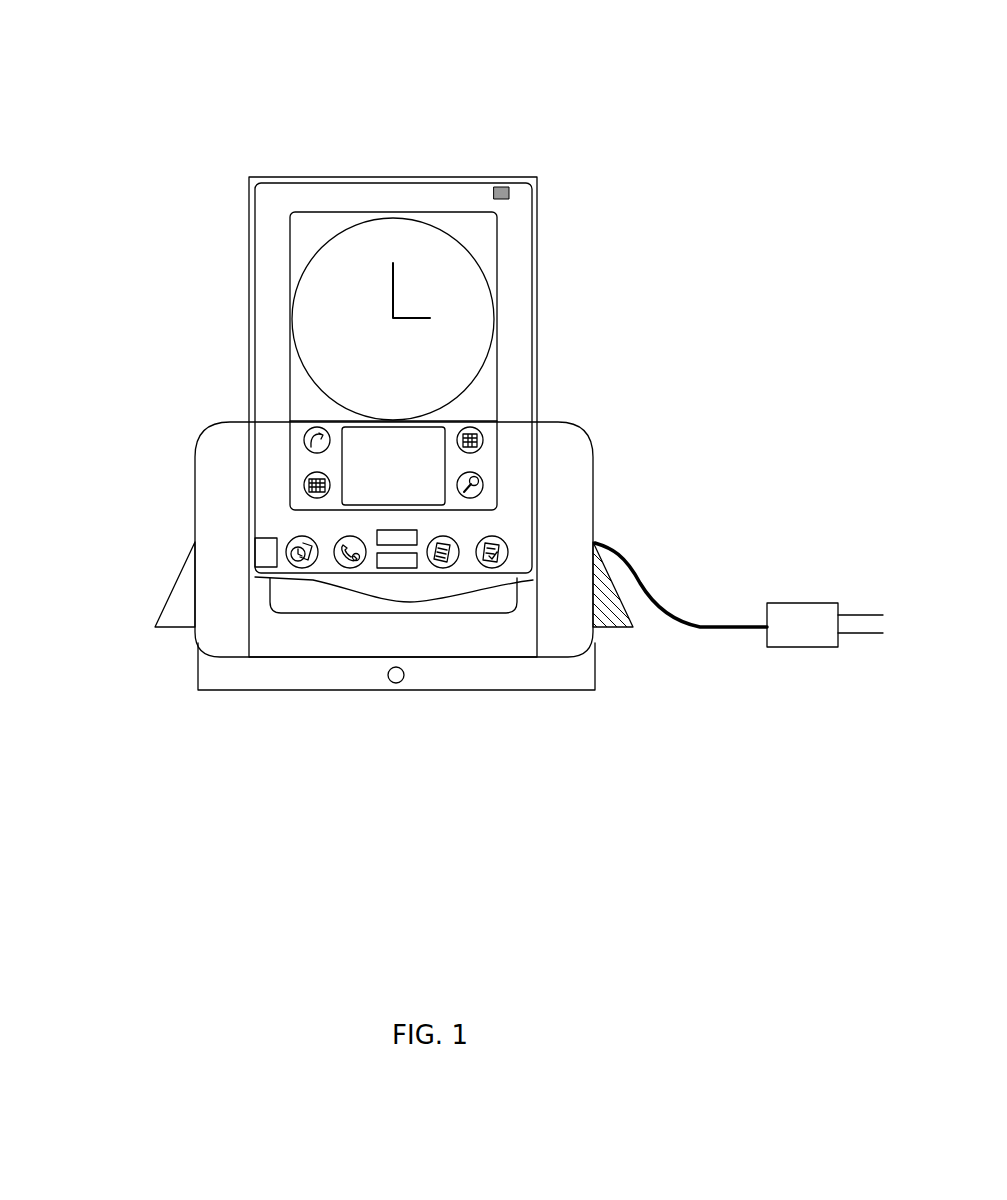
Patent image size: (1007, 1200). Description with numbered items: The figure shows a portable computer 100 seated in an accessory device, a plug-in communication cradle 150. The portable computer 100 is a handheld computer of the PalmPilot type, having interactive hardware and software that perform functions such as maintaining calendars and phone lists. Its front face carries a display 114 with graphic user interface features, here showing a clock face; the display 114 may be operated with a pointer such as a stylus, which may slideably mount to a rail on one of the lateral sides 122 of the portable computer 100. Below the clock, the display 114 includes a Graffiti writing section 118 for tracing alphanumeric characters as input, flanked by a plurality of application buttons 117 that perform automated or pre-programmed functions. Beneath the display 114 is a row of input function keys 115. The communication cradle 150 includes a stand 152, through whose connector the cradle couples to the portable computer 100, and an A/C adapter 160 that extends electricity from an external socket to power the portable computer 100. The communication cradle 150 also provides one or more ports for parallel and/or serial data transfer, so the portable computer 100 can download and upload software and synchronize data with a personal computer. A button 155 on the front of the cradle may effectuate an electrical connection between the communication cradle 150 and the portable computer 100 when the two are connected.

The portable computer 100 is at (450, 153).
The display 114 is at (481, 297).
The input function keys 115 is at (308, 565).
The application buttons 117 is at (303, 442).
The Graffiti writing section 118 is at (420, 485).
The lateral sides 122 is at (270, 377).
The communication cradle 150 is at (130, 606).
The stand 152 is at (635, 622).
The button 155 is at (397, 677).
The A/C adapter 160 is at (803, 603).